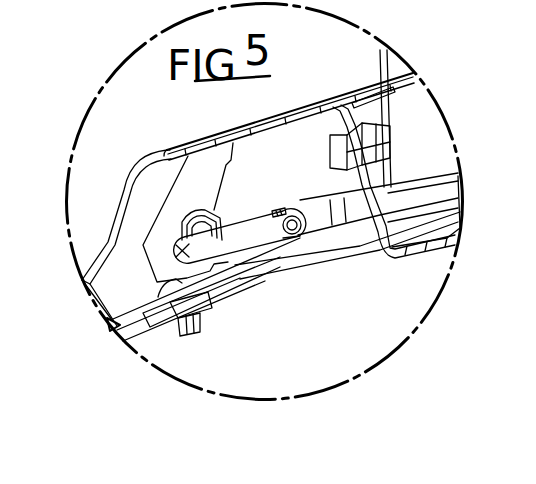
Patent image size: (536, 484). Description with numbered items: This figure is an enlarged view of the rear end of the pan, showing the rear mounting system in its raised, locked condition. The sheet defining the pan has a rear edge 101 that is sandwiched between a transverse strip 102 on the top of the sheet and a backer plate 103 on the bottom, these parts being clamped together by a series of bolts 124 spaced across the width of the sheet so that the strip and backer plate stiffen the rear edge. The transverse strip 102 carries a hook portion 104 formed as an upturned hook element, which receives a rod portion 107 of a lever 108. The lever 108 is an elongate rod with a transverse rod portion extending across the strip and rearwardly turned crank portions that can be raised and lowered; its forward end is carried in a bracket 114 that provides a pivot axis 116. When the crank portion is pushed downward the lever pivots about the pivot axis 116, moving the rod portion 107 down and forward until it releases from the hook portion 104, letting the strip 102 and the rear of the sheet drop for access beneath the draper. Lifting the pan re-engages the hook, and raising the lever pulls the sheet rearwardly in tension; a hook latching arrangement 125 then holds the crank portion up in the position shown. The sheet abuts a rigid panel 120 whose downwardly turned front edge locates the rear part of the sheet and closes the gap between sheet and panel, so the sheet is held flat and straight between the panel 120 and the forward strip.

The rear edge 101 is at (233, 280).
The transverse strip 102 is at (268, 250).
The backer plate 103 is at (210, 285).
The hook portion 104 is at (300, 207).
The rod portion 107 is at (307, 234).
The lever 108 is at (236, 225).
The bracket 114 is at (176, 178).
The pivot axis 116 is at (190, 215).
The rigid panel 120 is at (267, 118).
The bolt 124 is at (110, 333).
The hook latching arrangement 125 is at (393, 167).